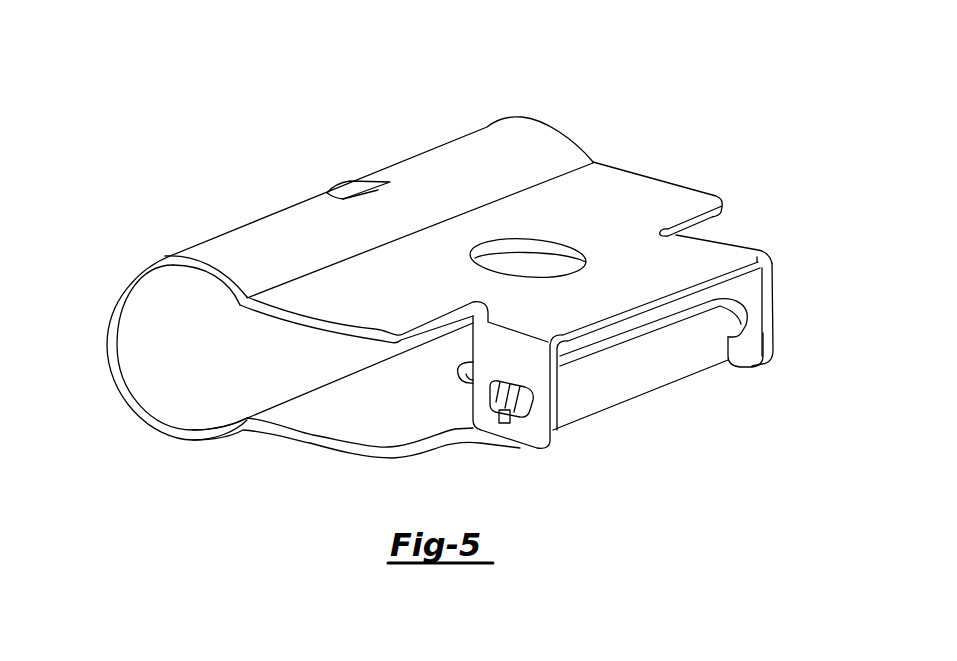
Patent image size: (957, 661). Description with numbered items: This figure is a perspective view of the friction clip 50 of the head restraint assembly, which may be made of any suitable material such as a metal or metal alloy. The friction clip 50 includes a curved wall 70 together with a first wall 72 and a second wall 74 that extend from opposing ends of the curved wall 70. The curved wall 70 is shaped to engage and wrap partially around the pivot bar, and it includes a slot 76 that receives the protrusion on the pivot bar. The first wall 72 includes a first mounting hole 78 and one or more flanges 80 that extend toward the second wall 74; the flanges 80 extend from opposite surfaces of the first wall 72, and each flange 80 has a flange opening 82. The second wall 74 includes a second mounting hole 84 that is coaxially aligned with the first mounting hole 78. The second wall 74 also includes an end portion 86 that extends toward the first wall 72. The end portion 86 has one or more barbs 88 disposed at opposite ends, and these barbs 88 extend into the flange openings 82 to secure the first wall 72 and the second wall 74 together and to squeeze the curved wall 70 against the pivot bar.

The friction clip 50 is at (465, 310).
The curved wall 70 is at (107, 310).
The first wall 72 is at (657, 178).
The second wall 74 is at (322, 437).
The slot 76 is at (344, 186).
The first mounting hole 78 is at (472, 266).
The flange 80 is at (775, 286).
The flange opening 82 is at (748, 320).
The second mounting hole 84 is at (462, 378).
The end portion 86 is at (637, 367).
The barb 88 is at (755, 335).